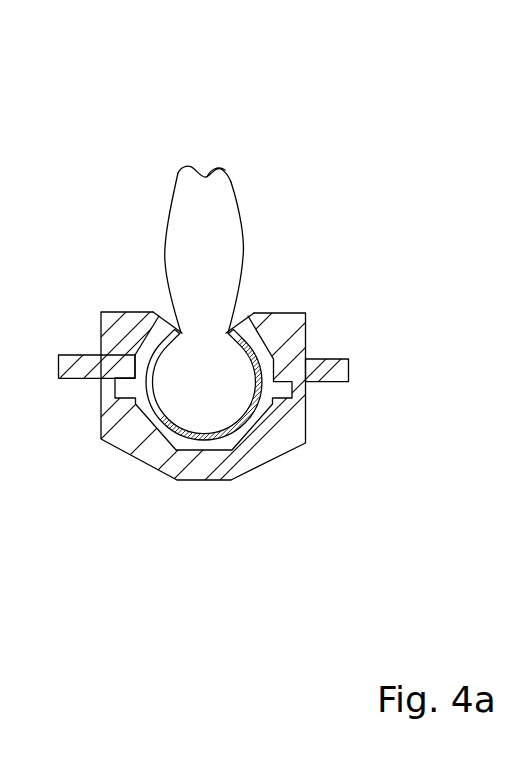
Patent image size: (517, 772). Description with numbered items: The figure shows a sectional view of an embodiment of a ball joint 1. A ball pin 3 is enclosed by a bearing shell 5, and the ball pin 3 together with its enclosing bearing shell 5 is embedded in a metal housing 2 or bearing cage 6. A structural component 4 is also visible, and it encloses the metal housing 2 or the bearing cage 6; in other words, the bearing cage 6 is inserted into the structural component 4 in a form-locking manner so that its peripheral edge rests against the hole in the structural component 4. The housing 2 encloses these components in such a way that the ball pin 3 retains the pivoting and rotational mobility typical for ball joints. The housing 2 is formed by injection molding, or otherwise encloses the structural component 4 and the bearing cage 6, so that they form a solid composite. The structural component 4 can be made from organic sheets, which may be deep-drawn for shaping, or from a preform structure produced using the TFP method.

The ball joint 1 is at (230, 369).
The metal housing 2 is at (128, 425).
The ball pin 3 is at (200, 245).
The structural component 4 is at (87, 368).
The bearing shell 5 is at (270, 313).
The bearing cage 6 is at (229, 438).